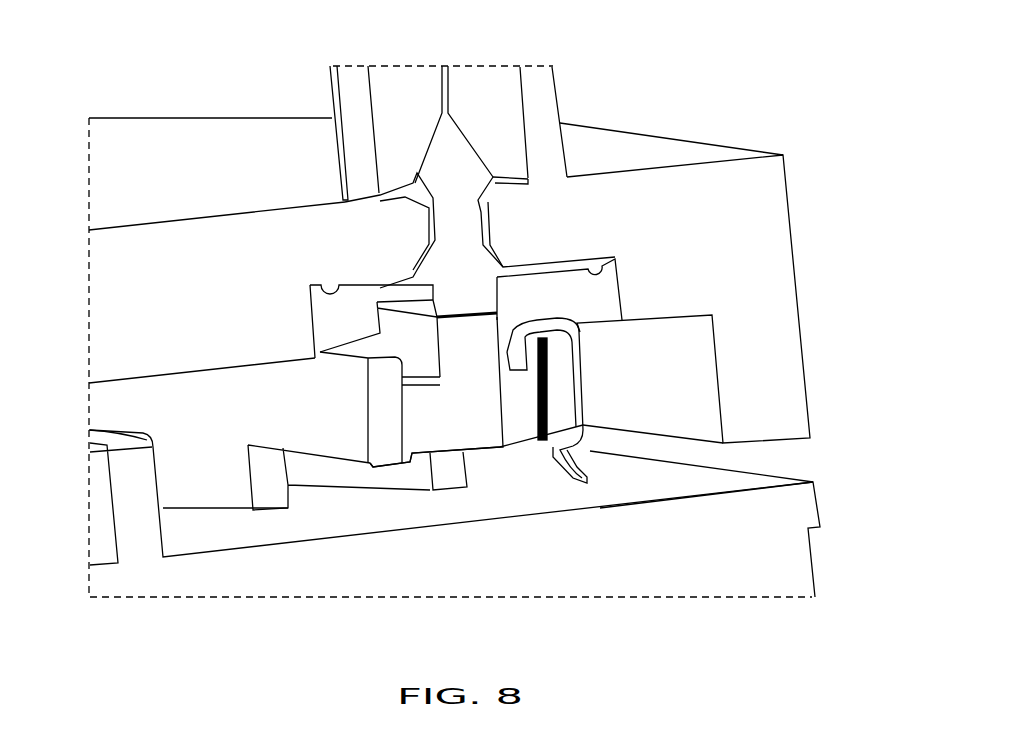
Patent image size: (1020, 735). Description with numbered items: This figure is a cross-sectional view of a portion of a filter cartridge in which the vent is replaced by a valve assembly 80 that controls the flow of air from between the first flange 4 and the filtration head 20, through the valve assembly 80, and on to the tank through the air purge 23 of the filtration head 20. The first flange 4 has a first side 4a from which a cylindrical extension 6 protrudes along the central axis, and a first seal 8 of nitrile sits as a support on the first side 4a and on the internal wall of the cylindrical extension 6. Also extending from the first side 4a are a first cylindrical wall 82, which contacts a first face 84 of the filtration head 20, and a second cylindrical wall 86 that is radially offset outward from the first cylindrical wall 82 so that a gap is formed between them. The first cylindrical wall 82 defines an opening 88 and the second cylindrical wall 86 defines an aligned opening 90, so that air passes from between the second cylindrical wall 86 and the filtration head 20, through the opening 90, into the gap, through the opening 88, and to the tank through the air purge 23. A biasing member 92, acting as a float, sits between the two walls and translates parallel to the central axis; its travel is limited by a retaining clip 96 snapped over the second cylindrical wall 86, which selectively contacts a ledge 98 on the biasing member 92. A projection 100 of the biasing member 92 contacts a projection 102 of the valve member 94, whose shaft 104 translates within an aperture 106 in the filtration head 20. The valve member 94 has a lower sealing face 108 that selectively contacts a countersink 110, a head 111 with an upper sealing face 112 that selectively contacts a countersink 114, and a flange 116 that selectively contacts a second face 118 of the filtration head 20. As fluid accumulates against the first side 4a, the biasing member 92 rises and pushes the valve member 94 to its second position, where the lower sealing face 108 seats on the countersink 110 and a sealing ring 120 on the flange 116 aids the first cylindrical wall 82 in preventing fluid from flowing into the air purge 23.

The first flange 4 is at (732, 567).
The first side 4a is at (385, 535).
The cylindrical extension 6 is at (135, 503).
The first seal 8 is at (100, 482).
The filtration head 20 is at (773, 327).
The air purge 23 is at (348, 85).
The valve assembly 80 is at (590, 298).
The first cylindrical wall 82 is at (205, 433).
The first face 84 is at (130, 375).
The second cylindrical wall 86 is at (347, 472).
The opening 88 is at (267, 487).
The opening 90 is at (455, 468).
The biasing member 92 is at (517, 462).
The valve member 94 is at (418, 143).
The retaining clip 96 is at (588, 397).
The ledge 98 is at (520, 395).
The projection 100 is at (443, 346).
The projection 102 is at (447, 287).
The shaft 104 is at (463, 210).
The aperture 106 is at (430, 227).
The lower sealing face 108 is at (505, 257).
The countersink 110 is at (493, 250).
The head 111 is at (450, 147).
The upper sealing face 112 is at (507, 175).
The countersink 114 is at (413, 207).
The flange 116 is at (563, 261).
The second face 118 is at (312, 297).
The sealing ring 120 is at (615, 257).